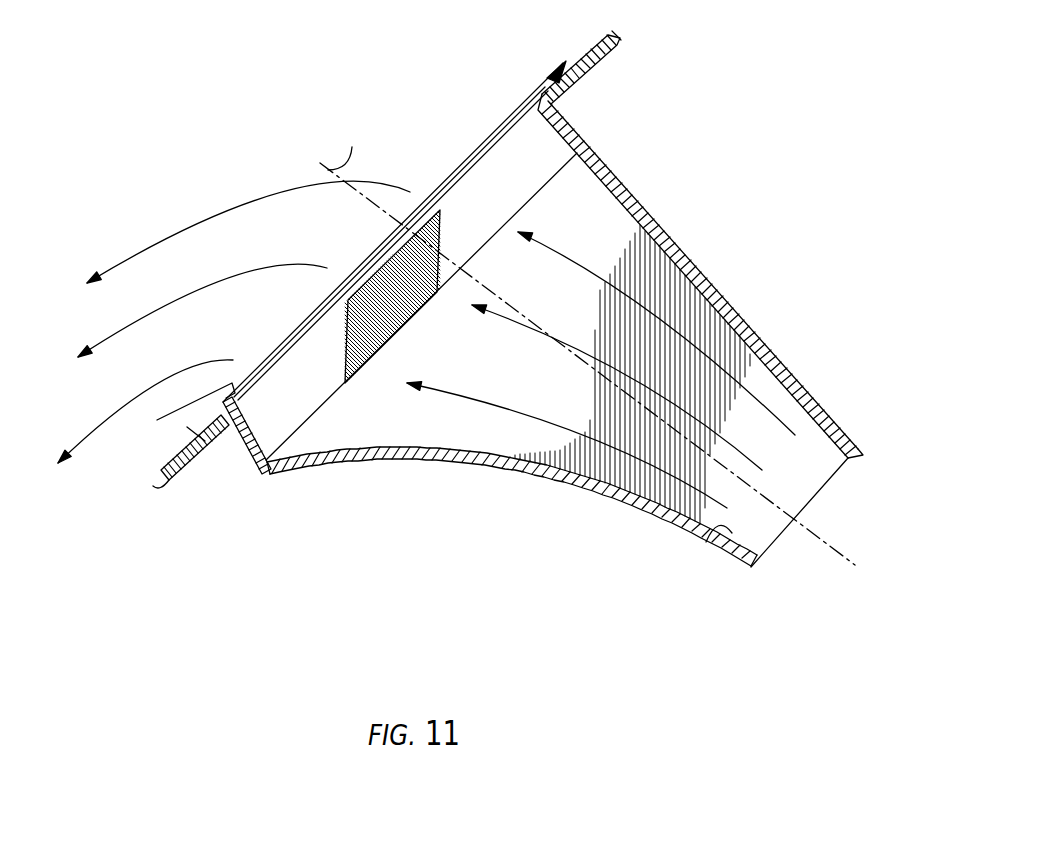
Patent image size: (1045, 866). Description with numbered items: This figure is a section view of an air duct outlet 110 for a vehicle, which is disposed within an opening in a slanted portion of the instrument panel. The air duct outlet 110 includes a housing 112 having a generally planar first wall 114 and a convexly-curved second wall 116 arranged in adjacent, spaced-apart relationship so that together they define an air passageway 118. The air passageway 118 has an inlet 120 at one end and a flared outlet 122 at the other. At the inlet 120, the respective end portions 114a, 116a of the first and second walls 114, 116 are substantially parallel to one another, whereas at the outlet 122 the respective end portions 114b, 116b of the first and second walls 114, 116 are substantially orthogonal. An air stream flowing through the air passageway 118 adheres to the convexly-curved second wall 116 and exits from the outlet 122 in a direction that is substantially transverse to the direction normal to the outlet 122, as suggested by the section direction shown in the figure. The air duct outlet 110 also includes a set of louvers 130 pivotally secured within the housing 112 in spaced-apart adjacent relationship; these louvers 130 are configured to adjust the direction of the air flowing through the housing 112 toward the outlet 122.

The air duct outlet 110 is at (695, 167).
The housing 112 is at (240, 463).
The first wall 114 is at (722, 292).
The end portion of first wall 114a is at (852, 462).
The end portion of first wall 114b is at (535, 105).
The second wall 116 is at (500, 468).
The end portion of second wall 116a is at (745, 560).
The end portion of second wall 116b is at (292, 448).
The air passageway 118 is at (753, 532).
The inlet 120 is at (722, 528).
The flared outlet 122 is at (234, 322).
The louvers 130 is at (323, 343).